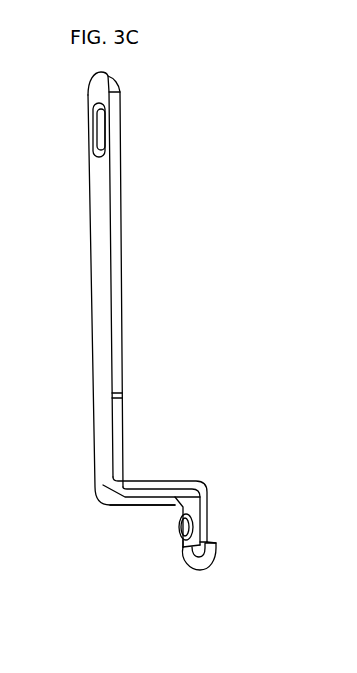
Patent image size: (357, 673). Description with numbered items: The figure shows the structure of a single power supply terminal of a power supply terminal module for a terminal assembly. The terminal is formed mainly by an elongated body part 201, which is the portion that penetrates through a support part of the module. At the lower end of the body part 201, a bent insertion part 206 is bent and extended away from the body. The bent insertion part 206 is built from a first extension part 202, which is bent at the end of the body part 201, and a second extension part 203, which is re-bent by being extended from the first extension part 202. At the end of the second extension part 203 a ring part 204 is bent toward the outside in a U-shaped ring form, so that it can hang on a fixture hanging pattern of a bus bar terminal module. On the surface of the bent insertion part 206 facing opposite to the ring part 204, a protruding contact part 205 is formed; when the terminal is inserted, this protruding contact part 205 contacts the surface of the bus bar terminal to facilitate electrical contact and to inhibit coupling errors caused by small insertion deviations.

The body part 201 is at (124, 280).
The first extension part 202 is at (163, 480).
The second extension part 203 is at (208, 512).
The ring part 204 is at (217, 552).
The protruding contact part 205 is at (176, 520).
The insertion part 206 is at (151, 511).